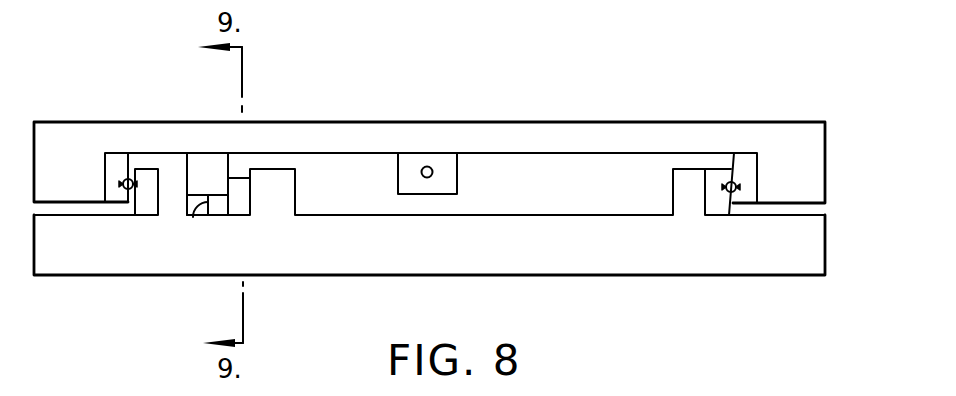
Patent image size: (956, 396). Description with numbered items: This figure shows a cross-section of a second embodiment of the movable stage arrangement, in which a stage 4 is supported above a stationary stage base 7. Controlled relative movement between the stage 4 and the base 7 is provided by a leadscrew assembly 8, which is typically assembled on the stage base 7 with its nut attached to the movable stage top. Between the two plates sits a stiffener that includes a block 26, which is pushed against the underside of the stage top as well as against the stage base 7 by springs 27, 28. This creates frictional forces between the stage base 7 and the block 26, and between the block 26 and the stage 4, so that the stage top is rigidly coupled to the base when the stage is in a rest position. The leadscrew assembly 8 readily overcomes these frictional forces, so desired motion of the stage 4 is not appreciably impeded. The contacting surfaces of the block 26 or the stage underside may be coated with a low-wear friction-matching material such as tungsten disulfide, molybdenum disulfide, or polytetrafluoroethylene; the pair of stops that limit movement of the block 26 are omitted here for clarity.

The stage 4 is at (815, 167).
The stage base 7 is at (813, 239).
The leadscrew assembly 8 is at (452, 178).
The block 26 is at (205, 160).
The spring 27 is at (242, 178).
The spring 28 is at (193, 217).